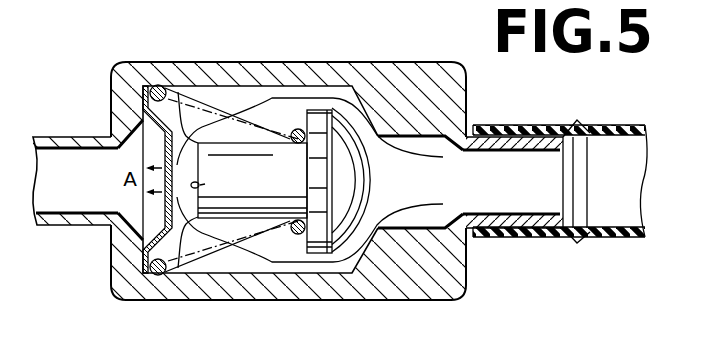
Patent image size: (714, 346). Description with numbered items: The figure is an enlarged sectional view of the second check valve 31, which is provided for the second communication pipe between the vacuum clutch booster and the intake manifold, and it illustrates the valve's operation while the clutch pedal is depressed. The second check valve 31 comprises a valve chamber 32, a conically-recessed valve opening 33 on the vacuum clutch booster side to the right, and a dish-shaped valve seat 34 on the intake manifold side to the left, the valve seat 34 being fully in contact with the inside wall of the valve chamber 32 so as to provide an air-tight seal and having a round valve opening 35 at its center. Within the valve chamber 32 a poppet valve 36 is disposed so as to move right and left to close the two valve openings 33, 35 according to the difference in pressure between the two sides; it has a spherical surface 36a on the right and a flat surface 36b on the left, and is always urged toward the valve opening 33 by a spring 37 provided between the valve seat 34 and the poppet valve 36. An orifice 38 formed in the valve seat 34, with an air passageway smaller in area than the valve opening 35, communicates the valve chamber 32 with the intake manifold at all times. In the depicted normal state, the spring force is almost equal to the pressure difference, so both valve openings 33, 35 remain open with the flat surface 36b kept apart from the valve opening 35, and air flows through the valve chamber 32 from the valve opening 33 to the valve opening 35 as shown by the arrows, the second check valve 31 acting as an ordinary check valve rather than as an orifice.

The second check valve 31 is at (293, 62).
The valve chamber 32 is at (258, 93).
The conically-recessed valve opening 33 is at (347, 84).
The dish-shaped valve seat 34 is at (176, 88).
The round valve opening 35 is at (172, 203).
The poppet valve 36 is at (282, 214).
The spherical surface 36a is at (369, 192).
The flat surface 36b is at (205, 184).
The spring 37 is at (307, 177).
The orifice 38 is at (163, 126).